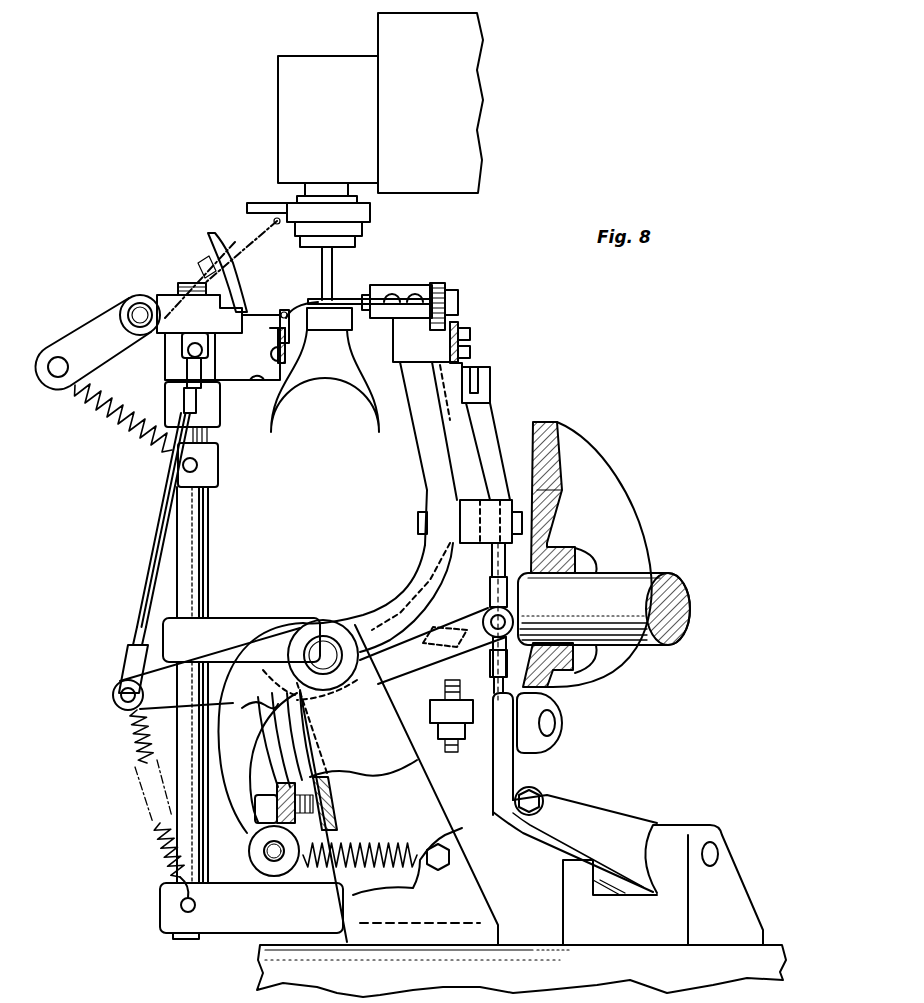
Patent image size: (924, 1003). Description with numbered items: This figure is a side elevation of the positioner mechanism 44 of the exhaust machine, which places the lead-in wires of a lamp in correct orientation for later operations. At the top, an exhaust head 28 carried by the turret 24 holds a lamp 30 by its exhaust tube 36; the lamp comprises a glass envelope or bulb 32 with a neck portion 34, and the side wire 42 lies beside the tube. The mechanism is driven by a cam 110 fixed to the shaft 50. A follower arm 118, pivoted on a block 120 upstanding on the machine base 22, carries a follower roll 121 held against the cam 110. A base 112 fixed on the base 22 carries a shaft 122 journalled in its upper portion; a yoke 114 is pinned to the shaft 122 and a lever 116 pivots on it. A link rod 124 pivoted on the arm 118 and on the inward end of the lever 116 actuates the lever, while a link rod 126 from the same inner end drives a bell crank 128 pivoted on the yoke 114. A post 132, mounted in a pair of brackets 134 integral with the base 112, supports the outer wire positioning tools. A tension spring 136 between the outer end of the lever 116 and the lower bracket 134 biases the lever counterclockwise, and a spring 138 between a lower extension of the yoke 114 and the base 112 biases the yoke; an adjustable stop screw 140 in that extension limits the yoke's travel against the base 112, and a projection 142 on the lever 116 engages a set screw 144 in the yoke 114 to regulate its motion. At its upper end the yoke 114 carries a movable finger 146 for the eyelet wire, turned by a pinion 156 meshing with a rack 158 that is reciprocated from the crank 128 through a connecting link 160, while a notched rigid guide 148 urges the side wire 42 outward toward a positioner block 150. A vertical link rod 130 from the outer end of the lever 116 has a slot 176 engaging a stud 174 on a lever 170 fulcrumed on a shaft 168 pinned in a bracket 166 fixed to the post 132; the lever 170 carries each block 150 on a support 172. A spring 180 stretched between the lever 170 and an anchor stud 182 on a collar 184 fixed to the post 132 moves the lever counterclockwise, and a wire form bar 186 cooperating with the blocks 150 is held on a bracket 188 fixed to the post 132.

The base 22 is at (532, 943).
The turret 24 is at (472, 88).
The exhaust head 28 is at (288, 115).
The lamp 30 is at (308, 497).
The glass envelope or bulb 32 is at (376, 452).
The neck portion 34 is at (353, 322).
The exhaust tube 36 is at (330, 262).
The side wire 42 is at (297, 307).
The positioner mechanism 44 is at (146, 845).
The shaft 50 is at (632, 585).
The cam 110 is at (618, 475).
The base 112 is at (427, 800).
The yoke 114 is at (435, 473).
The lever 116 is at (453, 607).
The follower arm 118 is at (595, 817).
The block 120 is at (678, 830).
The follower roll 121 is at (560, 727).
The shaft 122 is at (323, 648).
The link rod 124 is at (493, 663).
The link rod 126 is at (503, 590).
The bell crank 128 is at (483, 420).
The link rod 130 is at (145, 575).
The post 132 is at (210, 548).
The bracket 134 is at (230, 625).
The tension spring 136 is at (137, 760).
The spring 138 is at (377, 847).
The adjustable stop screw 140 is at (310, 763).
The projection 142 is at (440, 653).
The set screw 144 is at (450, 750).
The movable finger 146 is at (372, 288).
The notched rigid guide 148 is at (338, 298).
The positioner block 150 is at (283, 305).
The pinion 156 is at (437, 283).
The rack 158 is at (433, 335).
The connecting link 160 is at (478, 370).
The bracket 166 is at (168, 352).
The shaft 168 is at (140, 307).
The lever 170 is at (214, 252).
The support 172 is at (263, 318).
The stud 174 is at (202, 351).
The slot 176 is at (201, 388).
The spring 180 is at (137, 438).
The anchor stud 182 is at (197, 463).
The collar 184 is at (216, 477).
The wire form bar 186 is at (286, 348).
The bracket 188 is at (268, 390).